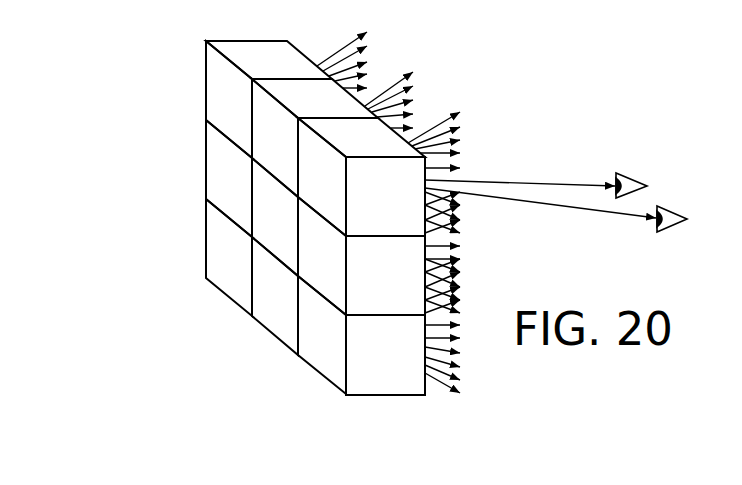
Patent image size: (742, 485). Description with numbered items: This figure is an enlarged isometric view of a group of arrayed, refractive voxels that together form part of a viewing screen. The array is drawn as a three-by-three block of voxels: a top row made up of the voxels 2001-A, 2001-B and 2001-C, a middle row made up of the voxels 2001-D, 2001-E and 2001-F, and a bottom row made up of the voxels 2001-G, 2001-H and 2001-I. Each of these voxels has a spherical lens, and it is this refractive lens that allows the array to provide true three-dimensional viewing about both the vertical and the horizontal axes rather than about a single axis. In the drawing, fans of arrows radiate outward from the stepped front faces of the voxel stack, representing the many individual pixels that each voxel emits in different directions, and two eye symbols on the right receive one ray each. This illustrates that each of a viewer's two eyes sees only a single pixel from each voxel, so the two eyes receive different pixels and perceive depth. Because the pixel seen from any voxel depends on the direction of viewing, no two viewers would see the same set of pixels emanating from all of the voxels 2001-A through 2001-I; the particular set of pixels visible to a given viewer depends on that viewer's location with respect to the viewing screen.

The voxel 2001-A is at (221, 75).
The voxel 2001-B is at (275, 138).
The voxel 2001-C is at (380, 140).
The voxel 2001-D is at (221, 157).
The voxel 2001-E is at (275, 218).
The voxel 2001-F is at (388, 253).
The voxel 2001-G is at (221, 234).
The voxel 2001-H is at (276, 298).
The voxel 2001-I is at (323, 350).